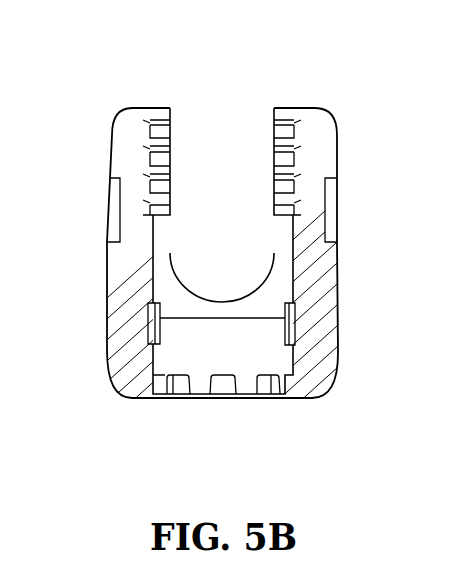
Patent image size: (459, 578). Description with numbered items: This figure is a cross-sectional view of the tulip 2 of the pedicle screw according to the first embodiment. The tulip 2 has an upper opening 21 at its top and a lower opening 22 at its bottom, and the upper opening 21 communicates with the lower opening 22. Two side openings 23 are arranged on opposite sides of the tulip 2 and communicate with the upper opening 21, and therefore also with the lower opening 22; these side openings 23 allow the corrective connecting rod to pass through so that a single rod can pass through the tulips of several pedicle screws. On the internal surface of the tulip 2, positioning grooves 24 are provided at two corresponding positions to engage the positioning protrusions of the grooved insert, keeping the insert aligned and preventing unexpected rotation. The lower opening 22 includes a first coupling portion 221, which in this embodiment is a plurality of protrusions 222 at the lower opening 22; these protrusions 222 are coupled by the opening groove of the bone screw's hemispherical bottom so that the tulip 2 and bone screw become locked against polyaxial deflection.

The tulip 2 is at (364, 273).
The upper opening 21 is at (224, 118).
The side openings 23 is at (205, 261).
The positioning grooves 24 is at (163, 342).
The lower opening 22 is at (202, 366).
The first coupling portion 221 is at (238, 394).
The protrusions 222 is at (238, 394).